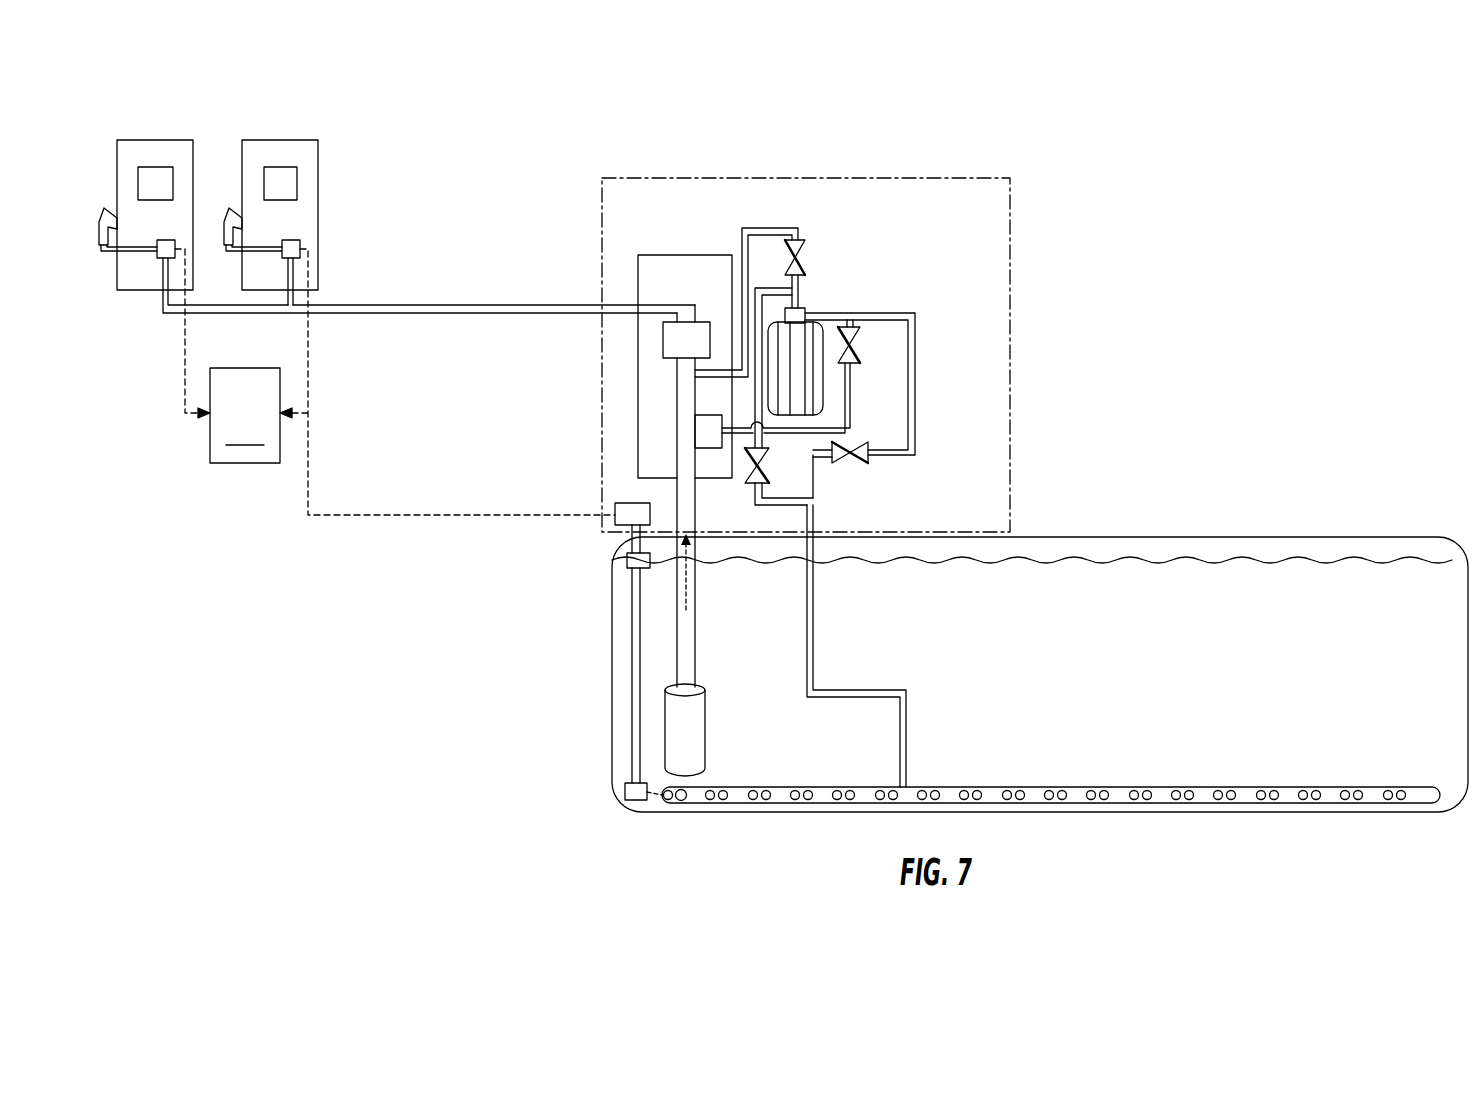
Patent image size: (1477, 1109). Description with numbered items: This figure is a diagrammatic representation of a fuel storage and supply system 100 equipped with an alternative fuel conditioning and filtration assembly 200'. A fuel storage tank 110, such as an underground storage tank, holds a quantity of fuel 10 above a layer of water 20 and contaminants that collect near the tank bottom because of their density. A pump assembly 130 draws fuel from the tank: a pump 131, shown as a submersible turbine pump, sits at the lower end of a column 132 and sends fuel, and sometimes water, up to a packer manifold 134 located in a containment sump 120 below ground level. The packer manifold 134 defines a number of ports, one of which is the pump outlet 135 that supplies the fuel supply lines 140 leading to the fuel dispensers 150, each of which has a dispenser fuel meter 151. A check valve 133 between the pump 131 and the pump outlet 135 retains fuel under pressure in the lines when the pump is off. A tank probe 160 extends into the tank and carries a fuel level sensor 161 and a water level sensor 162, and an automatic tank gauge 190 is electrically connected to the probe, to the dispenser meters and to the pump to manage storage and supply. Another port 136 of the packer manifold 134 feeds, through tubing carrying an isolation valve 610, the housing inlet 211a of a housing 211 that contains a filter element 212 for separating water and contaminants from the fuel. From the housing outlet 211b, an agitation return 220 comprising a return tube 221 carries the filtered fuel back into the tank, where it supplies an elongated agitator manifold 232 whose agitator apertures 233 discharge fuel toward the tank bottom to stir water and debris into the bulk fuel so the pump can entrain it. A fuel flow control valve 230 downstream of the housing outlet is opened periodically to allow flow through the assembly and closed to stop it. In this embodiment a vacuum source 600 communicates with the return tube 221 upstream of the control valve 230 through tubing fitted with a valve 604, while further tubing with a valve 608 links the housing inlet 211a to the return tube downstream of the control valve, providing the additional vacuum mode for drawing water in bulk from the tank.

The fuel 10 is at (1051, 689).
The water 20 is at (650, 805).
The fuel storage and supply system 100 is at (1137, 228).
The fuel storage tank 110 is at (993, 674).
The containment sump 120 is at (707, 178).
The pump assembly 130 is at (648, 717).
The pump 131 is at (665, 730).
The column 132 is at (677, 625).
The check valve 133 is at (663, 338).
The packer manifold 134 is at (638, 440).
The pump outlet 135 is at (653, 302).
The port 136 is at (724, 370).
The fuel supply lines 140 is at (443, 315).
The fuel dispensers 150 is at (262, 140).
The dispenser fuel meter 151 is at (163, 258).
The tank probe 160 is at (612, 520).
The fuel level sensor 161 is at (627, 562).
The water level sensor 162 is at (625, 793).
The automatic tank gauge 190 is at (395, 382).
The fuel conditioning and filtration assembly 200' is at (924, 436).
The housing 211 is at (826, 380).
The housing inlet 211a is at (806, 310).
The housing outlet 211b is at (812, 316).
The filter element 212 is at (812, 398).
The agitation return 220 is at (888, 677).
The return tube 221 is at (812, 688).
The fuel flow control valve 230 is at (860, 465).
The agitator manifold 232 is at (1051, 754).
The agitator apertures 233 is at (1150, 786).
The vacuum source 600 is at (713, 450).
The valve 604 is at (857, 353).
The valve 608 is at (762, 460).
The isolation valve 610 is at (797, 240).